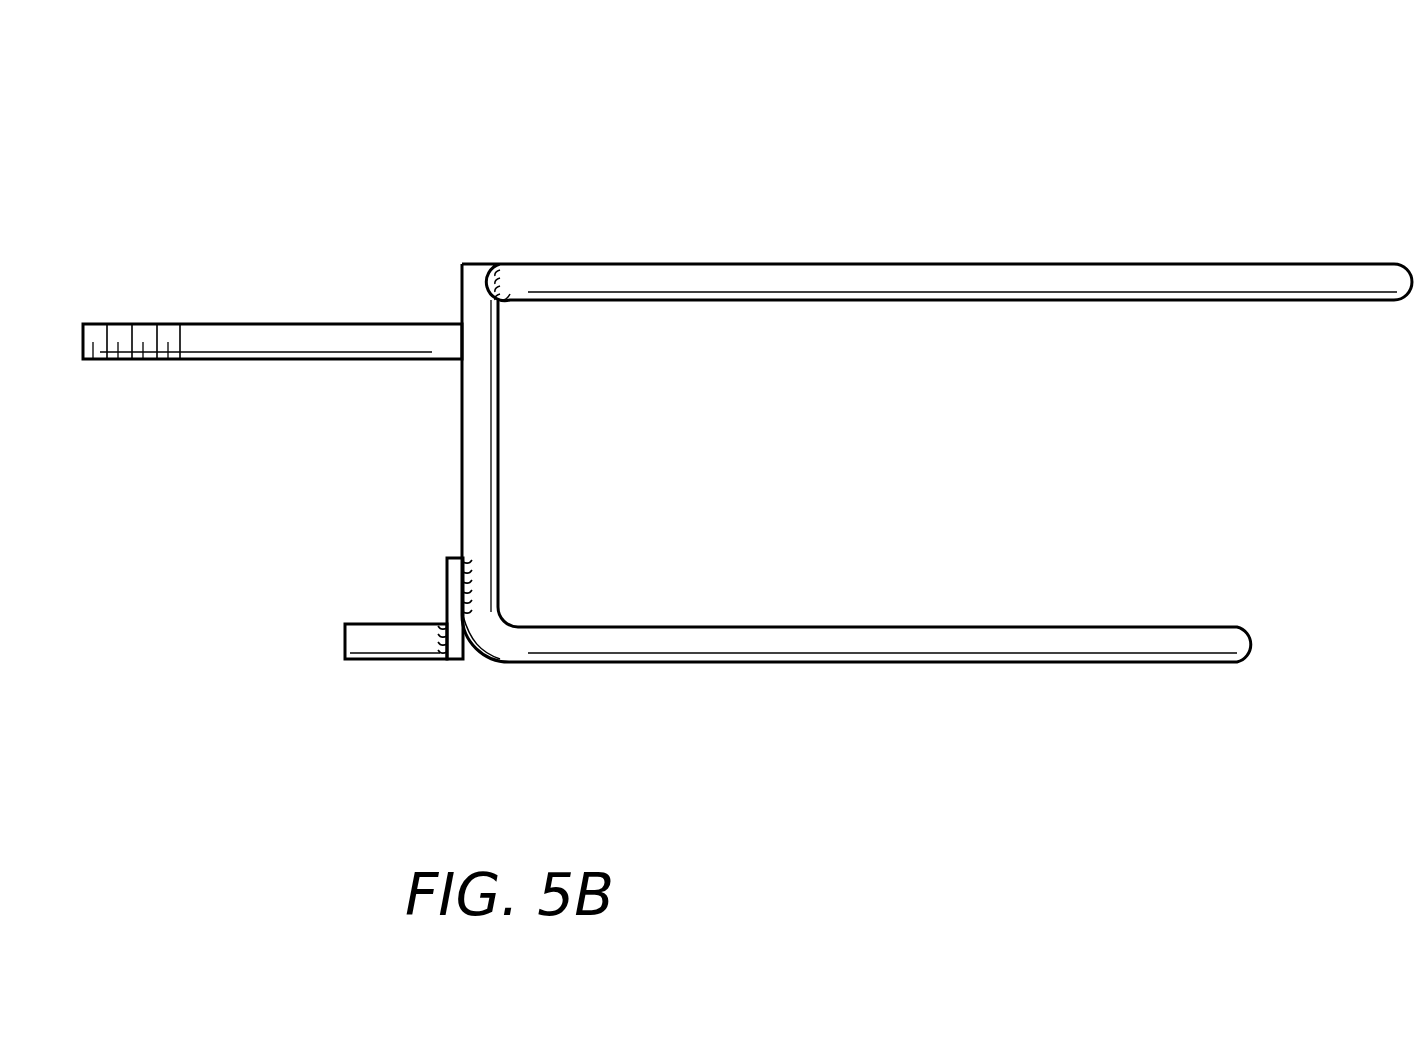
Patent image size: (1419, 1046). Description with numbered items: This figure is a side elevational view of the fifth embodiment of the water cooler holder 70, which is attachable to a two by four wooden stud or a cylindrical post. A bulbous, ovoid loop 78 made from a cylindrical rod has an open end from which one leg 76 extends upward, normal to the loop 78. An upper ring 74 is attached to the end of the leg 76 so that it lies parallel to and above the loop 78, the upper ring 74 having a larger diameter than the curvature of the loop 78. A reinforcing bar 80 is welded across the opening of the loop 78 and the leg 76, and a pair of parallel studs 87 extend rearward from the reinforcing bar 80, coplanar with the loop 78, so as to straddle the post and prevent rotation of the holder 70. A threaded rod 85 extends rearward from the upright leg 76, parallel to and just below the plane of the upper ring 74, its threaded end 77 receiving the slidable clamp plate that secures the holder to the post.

The water cooler holder 70 is at (1078, 137).
The upper ring 74 is at (752, 273).
The leg 76 is at (482, 485).
The loop 78 is at (915, 625).
The reinforcing bar 80 is at (447, 590).
The threaded rod 85 is at (272, 330).
The threaded end 77 is at (122, 330).
The studs 87 is at (365, 626).